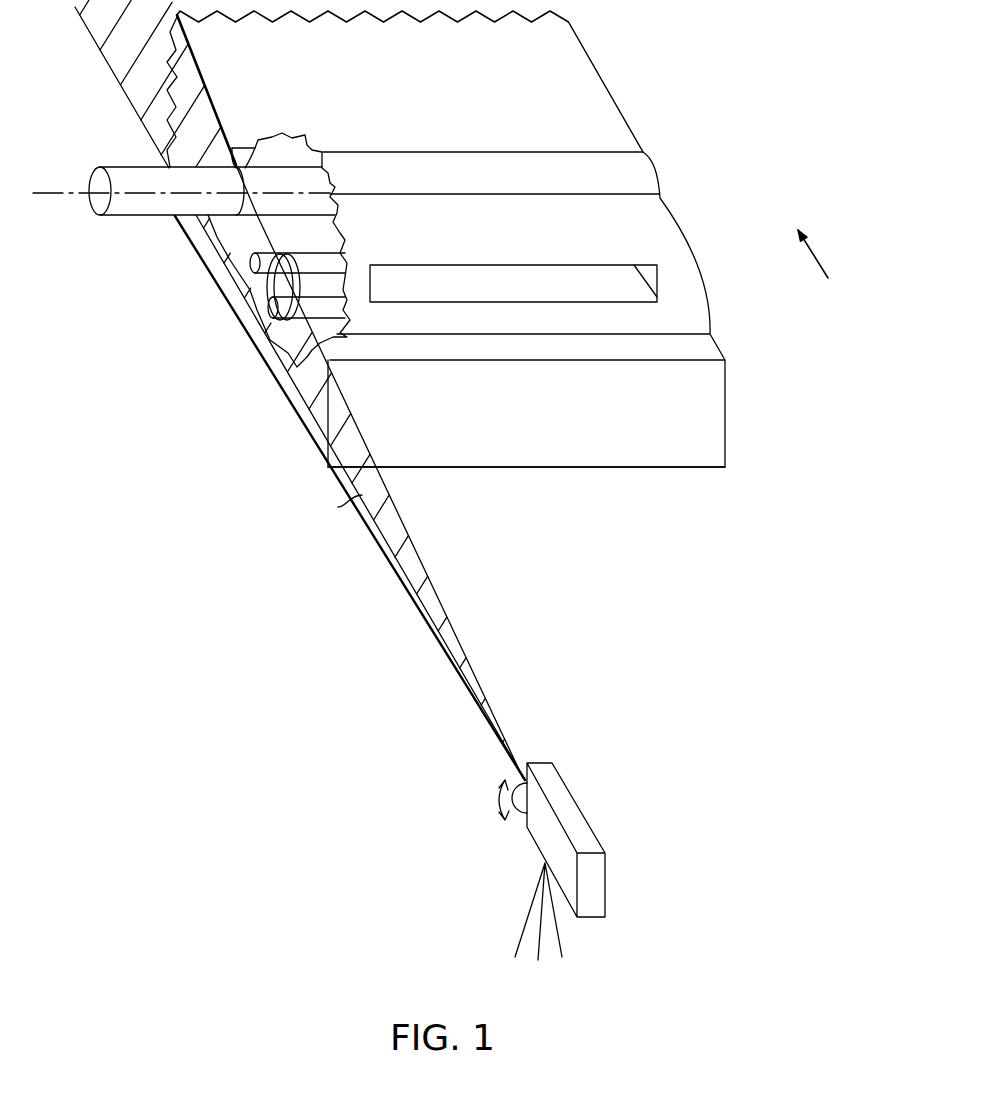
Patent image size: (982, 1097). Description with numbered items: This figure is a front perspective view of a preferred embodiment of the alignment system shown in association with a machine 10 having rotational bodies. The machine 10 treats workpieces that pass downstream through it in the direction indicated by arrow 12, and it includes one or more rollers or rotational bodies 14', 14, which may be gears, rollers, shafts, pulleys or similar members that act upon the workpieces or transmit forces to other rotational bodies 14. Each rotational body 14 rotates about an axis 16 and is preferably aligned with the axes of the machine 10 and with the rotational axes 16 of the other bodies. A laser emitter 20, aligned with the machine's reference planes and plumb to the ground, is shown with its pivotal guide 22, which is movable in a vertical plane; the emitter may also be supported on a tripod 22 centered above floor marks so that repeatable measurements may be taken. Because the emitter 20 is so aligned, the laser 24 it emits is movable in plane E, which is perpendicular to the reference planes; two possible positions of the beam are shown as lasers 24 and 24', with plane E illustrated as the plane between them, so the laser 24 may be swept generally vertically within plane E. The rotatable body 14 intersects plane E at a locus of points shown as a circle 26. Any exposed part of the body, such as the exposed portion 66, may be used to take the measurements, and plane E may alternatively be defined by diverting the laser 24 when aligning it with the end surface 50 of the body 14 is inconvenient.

The machine 10 is at (545, 82).
The arrow 12 is at (815, 255).
The rotational body 14 is at (325, 283).
The rotational body 14' is at (217, 240).
The axis 16 is at (56, 192).
The laser emitter 20 is at (585, 835).
The pivotal guide 22 is at (521, 767).
The laser 24 is at (300, 390).
The laser 24' is at (350, 498).
The circle 26 is at (251, 137).
The end surface 50 is at (97, 208).
The exposed portion 66 is at (113, 168).
The plane E is at (340, 507).